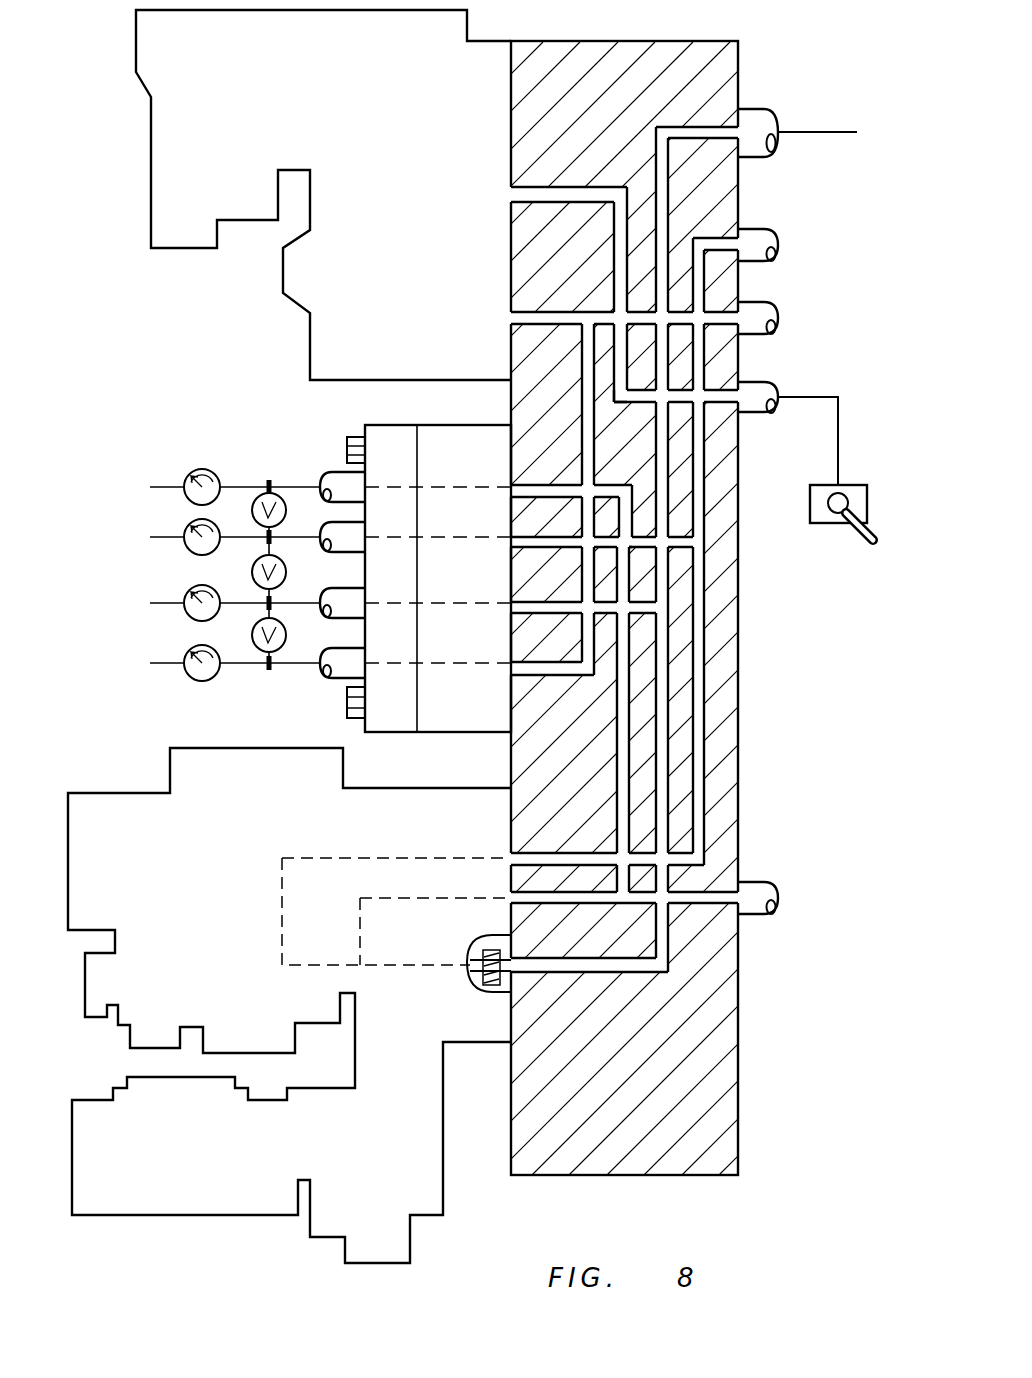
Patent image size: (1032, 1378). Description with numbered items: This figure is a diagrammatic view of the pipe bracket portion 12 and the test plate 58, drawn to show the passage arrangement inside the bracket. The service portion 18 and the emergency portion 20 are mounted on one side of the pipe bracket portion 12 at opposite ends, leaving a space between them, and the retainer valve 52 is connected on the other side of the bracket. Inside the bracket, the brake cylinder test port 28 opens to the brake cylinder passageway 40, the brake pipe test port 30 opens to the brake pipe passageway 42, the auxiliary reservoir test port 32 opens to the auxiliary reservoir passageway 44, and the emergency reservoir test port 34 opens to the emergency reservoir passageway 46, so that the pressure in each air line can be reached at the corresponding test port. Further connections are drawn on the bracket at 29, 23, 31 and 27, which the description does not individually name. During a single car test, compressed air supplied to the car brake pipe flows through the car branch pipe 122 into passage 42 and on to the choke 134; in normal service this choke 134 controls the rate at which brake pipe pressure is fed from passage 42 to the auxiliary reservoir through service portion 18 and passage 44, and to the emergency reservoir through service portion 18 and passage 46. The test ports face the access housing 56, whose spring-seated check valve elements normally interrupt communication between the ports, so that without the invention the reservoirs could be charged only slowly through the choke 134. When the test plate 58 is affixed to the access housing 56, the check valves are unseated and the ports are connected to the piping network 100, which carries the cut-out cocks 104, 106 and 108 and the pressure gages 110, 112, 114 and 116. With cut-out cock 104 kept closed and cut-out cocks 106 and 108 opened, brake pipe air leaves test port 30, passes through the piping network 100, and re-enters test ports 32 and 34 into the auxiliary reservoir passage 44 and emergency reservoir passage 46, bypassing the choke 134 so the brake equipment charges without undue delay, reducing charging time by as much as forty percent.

The pipe bracket portion 12 is at (727, 618).
The service portion 18 is at (194, 884).
The emergency portion 20 is at (342, 103).
The port fitting 23 is at (742, 245).
The port fitting 27 is at (748, 892).
The brake cylinder test port 28 is at (510, 663).
The port fitting 29 is at (745, 128).
The brake pipe test port 30 is at (510, 603).
The port fitting 31 is at (742, 318).
The auxiliary reservoir test port 32 is at (510, 537).
The emergency reservoir test port 34 is at (510, 487).
The brake cylinder passageway 40 is at (645, 318).
The brake pipe passageway 42 is at (663, 162).
The auxiliary reservoir passageway 44 is at (698, 277).
The emergency reservoir passageway 46 is at (547, 487).
The retainer valve 52 is at (853, 485).
The access housing 56 is at (452, 718).
The test plate 58 is at (385, 434).
The piping network 100 is at (230, 468).
The cut-out cock 104 is at (262, 651).
The cut-out cock 106 is at (252, 572).
The cut-out cock 108 is at (258, 496).
The pressure gage 110 is at (184, 663).
The pressure gage 112 is at (184, 603).
The pressure gage 114 is at (184, 537).
The pressure gage 116 is at (184, 487).
The car branch pipe 122 is at (815, 132).
The choke 134 is at (487, 980).